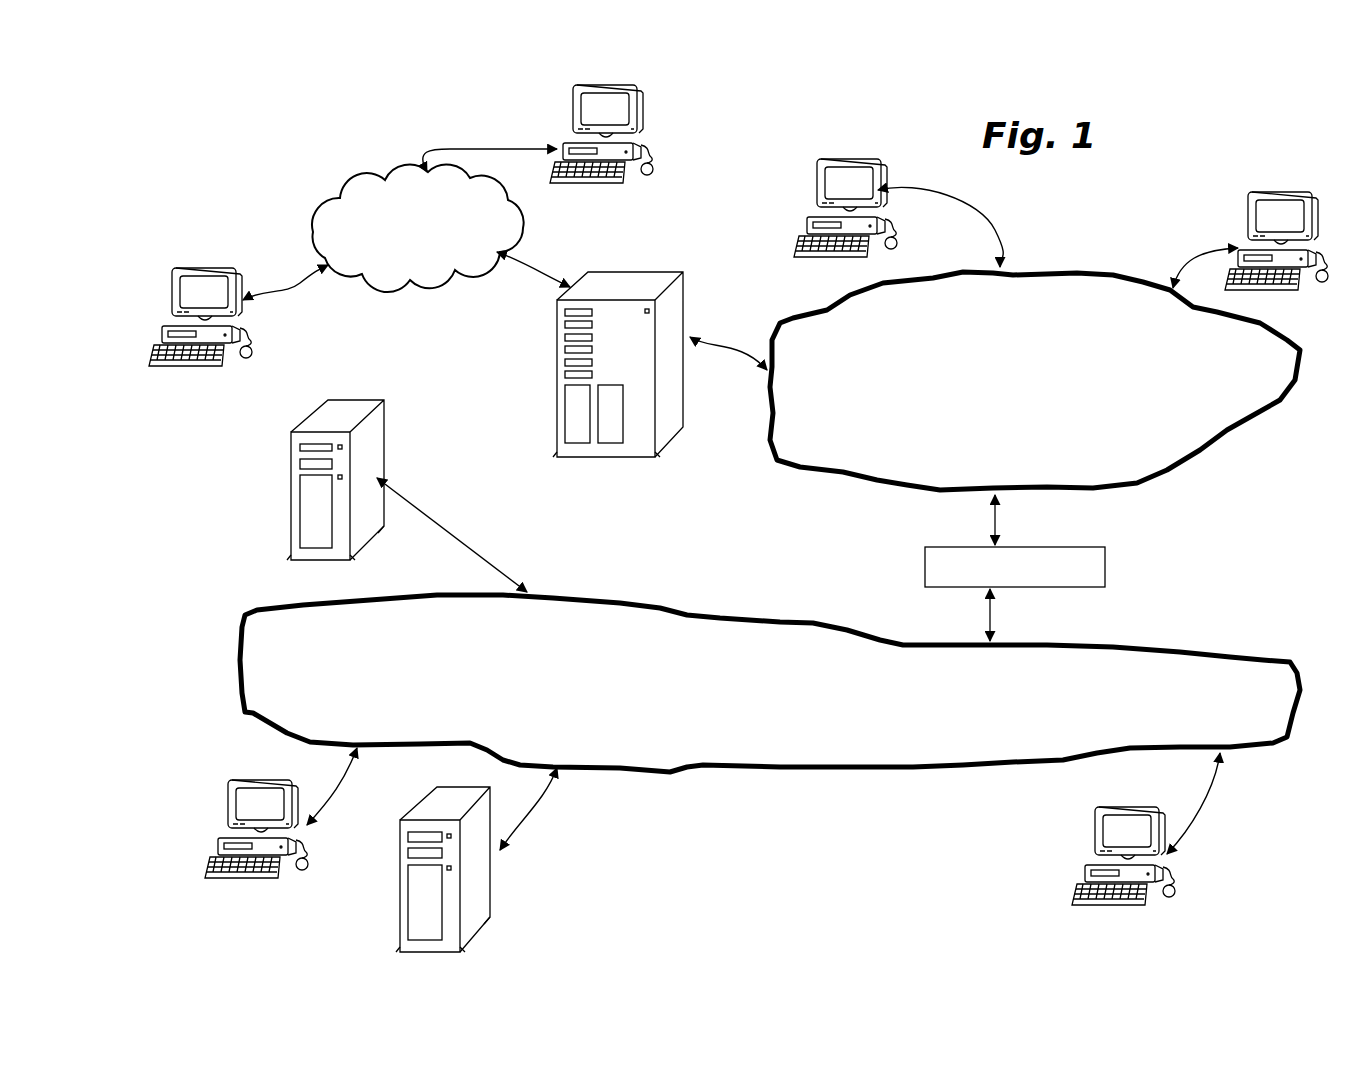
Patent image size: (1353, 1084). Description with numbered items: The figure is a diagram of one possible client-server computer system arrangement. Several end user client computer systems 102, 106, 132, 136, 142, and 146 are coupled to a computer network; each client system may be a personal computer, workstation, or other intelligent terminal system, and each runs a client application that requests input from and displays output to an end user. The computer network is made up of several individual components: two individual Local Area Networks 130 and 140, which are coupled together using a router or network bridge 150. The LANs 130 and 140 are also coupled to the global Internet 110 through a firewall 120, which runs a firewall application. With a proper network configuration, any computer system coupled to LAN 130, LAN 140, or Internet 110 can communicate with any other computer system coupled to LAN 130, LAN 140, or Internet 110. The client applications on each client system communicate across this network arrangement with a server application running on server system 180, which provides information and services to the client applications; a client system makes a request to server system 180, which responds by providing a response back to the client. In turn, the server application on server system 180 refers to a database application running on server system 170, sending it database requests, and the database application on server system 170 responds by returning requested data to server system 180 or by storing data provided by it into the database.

The client computer system 102 is at (192, 273).
The client computer system 106 is at (587, 113).
The Internet 110 is at (418, 229).
The firewall 120 is at (615, 285).
The Local Area Network 130 is at (780, 433).
The client computer system 132 is at (836, 168).
The client computer system 136 is at (1267, 200).
The Local Area Network 140 is at (247, 667).
The client computer system 142 is at (240, 807).
The client computer system 146 is at (1097, 827).
The router or network bridge 150 is at (1015, 568).
The server system 170 is at (505, 880).
The server system 180 is at (369, 414).